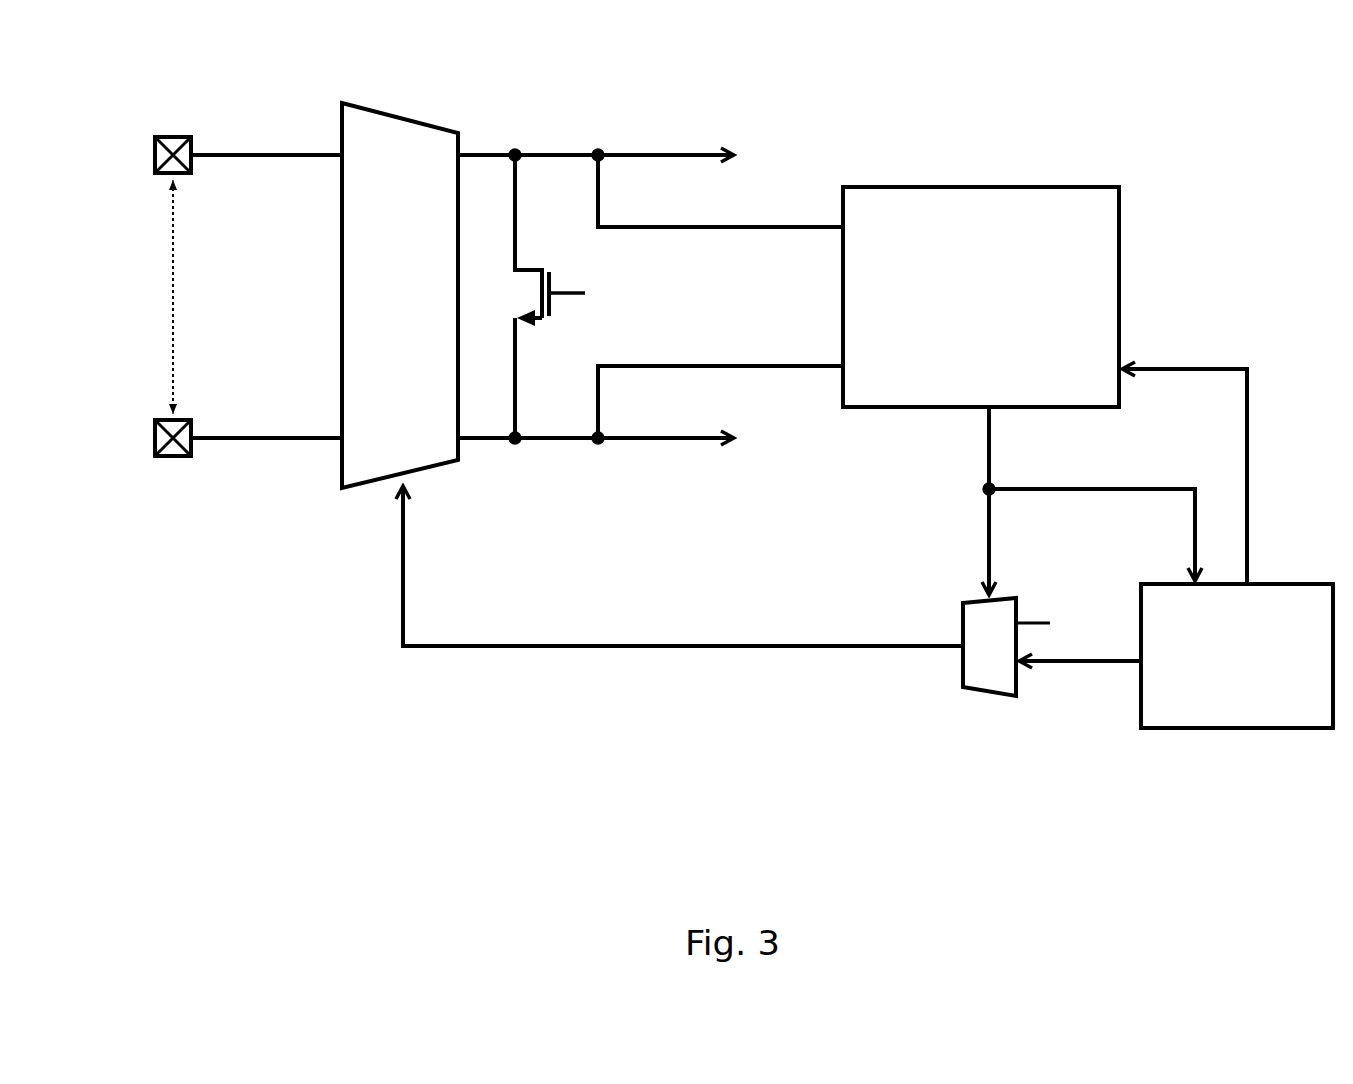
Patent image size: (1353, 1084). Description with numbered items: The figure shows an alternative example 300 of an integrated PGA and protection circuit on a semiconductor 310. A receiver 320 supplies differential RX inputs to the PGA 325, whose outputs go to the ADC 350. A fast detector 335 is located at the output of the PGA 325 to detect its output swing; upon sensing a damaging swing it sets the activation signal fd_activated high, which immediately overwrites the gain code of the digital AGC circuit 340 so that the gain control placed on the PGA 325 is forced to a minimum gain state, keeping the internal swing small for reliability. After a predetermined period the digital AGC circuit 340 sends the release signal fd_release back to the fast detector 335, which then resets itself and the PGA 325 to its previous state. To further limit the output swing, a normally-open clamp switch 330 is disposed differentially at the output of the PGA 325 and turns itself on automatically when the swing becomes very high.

The integrated PGA and protection circuit 300 is at (182, 903).
The semiconductor 310 is at (1104, 89).
The receiver 320 is at (128, 490).
The PGA 325 is at (382, 445).
The clamp switch 330 is at (570, 322).
The fast detector 335 is at (1071, 397).
The digital AGC circuit 340 is at (948, 745).
The ADC 350 is at (863, 165).